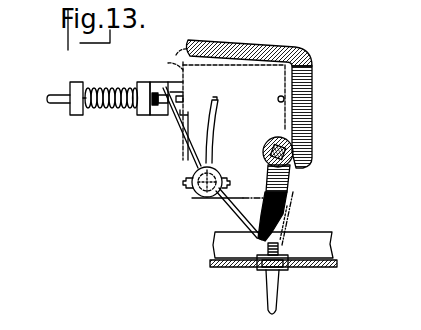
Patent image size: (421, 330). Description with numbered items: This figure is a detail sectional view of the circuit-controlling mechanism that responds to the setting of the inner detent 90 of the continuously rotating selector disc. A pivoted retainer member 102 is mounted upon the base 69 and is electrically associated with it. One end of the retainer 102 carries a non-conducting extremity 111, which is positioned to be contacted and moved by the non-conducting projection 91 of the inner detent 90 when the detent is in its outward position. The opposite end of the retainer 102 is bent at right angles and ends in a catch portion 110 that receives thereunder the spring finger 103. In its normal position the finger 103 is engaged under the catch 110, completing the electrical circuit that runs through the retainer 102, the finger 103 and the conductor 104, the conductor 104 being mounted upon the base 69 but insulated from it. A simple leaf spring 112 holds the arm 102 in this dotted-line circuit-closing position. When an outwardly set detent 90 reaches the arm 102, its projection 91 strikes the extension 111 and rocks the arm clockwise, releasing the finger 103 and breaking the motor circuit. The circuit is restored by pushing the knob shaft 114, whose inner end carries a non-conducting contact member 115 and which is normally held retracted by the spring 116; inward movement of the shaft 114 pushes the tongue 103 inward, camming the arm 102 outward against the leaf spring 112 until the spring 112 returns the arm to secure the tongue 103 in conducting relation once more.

The base 69 is at (250, 73).
The inner detent 90 is at (280, 270).
The non-conducting projection 91 is at (280, 246).
The pivoted retainer member 102 is at (304, 103).
The spring finger 103 is at (174, 125).
The conductor 104 is at (216, 123).
The catch portion 110 is at (240, 43).
The non-conducting extremity 111 is at (289, 209).
The leaf spring 112 is at (229, 206).
The shaft 114 is at (52, 93).
The non-conducting contact member 115 is at (153, 93).
The spring 116 is at (103, 80).